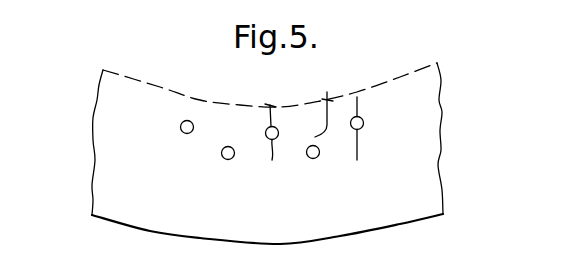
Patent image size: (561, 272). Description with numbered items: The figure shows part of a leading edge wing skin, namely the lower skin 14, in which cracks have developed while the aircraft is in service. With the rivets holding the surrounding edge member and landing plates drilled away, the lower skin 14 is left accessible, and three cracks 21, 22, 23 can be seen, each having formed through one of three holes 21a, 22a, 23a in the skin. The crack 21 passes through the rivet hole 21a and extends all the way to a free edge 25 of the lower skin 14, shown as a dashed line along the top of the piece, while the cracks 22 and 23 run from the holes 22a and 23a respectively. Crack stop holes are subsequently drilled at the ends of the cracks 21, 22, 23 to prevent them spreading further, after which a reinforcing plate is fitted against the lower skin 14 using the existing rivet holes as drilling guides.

The lower skin 14 is at (102, 169).
The free edge 25 is at (160, 86).
The hole 23a is at (270, 105).
The crack 23 is at (266, 160).
The crack 22 is at (328, 103).
The hole 22a is at (313, 158).
The crack 21 is at (352, 155).
The rivet hole 21a is at (364, 123).